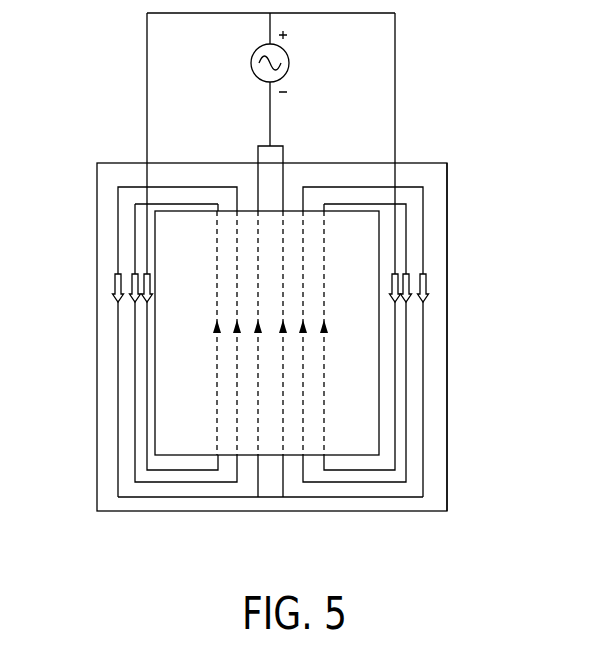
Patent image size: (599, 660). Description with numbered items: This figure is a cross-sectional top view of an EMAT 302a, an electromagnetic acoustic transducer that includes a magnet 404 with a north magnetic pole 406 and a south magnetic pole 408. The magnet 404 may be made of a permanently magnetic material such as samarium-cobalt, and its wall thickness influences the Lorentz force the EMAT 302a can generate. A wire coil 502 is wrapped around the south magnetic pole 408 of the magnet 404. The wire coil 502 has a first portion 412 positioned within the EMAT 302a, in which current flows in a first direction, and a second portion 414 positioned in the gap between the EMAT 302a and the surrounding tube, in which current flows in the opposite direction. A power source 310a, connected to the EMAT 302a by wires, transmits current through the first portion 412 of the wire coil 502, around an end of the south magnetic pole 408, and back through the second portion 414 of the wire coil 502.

The power source 310a is at (246, 65).
The wire coil 502 is at (350, 165).
The EMAT 302a is at (455, 298).
The first portion 412 is at (432, 335).
The second portion 414 is at (290, 505).
The north magnetic pole 406 is at (180, 340).
The south magnetic pole 408 is at (363, 391).
The magnet 404 is at (353, 446).